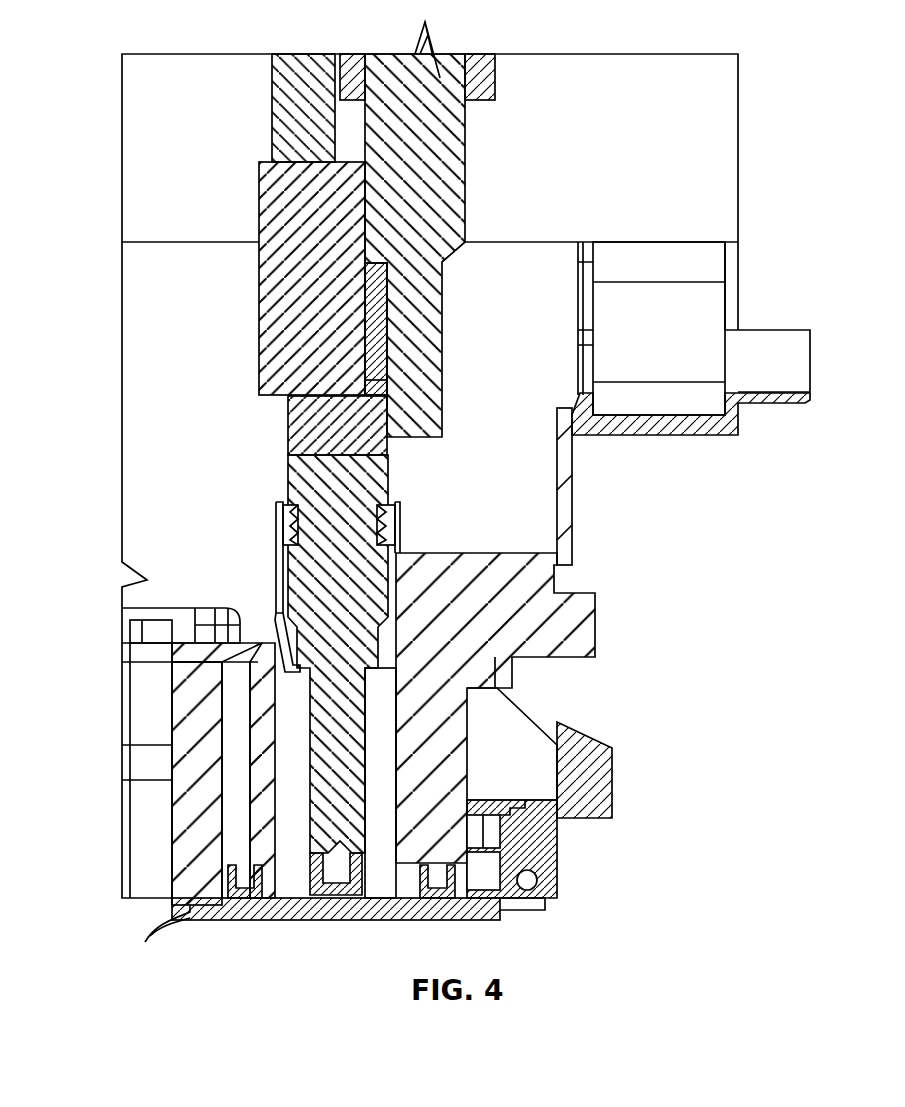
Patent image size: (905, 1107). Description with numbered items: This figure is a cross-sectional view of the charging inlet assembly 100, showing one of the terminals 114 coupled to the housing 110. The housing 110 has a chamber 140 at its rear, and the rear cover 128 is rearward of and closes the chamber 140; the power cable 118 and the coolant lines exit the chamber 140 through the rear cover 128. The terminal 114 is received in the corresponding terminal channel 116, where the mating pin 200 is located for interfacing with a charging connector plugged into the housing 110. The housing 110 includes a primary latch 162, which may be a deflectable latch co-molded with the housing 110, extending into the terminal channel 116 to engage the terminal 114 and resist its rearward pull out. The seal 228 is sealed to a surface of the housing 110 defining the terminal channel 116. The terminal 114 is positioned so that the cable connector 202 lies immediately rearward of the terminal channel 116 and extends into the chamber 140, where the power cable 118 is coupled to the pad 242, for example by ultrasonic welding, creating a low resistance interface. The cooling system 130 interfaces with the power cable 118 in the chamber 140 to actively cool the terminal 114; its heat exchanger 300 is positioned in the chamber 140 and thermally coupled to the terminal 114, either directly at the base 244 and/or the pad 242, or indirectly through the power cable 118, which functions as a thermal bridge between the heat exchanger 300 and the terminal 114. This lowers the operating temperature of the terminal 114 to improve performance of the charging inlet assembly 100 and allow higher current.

The charging inlet assembly 100 is at (752, 0).
The housing 110 is at (545, 855).
The terminal 114 is at (318, 833).
The terminal channel 116 is at (380, 866).
The power cable 118 is at (406, 82).
The rear cover 128 is at (718, 165).
The cooling system 130 is at (247, 257).
The chamber 140 is at (152, 462).
The primary latch 162 is at (293, 657).
The mating pin 200 is at (340, 698).
The cable connector 202 is at (288, 418).
The seal 228 is at (400, 519).
The pad 242 is at (378, 340).
The base 244 is at (318, 395).
The heat exchanger 300 is at (285, 278).